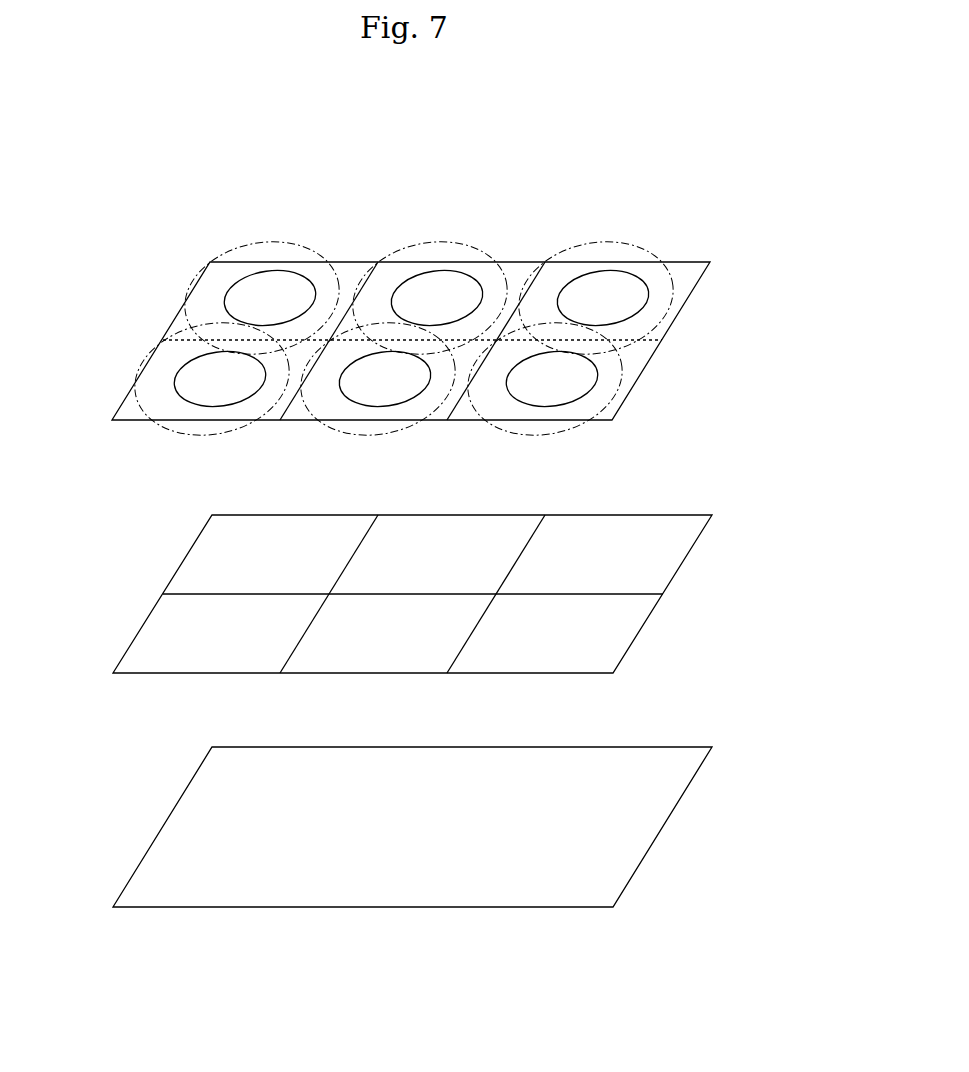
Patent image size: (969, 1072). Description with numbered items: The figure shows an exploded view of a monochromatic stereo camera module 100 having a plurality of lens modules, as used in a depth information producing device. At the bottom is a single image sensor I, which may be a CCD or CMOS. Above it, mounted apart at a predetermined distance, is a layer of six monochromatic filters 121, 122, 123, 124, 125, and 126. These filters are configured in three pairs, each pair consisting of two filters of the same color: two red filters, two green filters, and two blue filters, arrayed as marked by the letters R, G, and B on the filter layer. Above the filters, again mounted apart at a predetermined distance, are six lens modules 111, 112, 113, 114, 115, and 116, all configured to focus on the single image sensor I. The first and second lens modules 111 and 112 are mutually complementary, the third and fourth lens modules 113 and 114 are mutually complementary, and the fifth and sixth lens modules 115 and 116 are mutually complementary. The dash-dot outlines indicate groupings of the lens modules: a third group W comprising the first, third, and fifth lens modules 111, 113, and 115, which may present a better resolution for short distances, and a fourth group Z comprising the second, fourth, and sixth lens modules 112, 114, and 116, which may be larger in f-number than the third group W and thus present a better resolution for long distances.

The monochromatic stereo camera module 100 is at (667, 170).
The first lens module 111 is at (420, 280).
The second lens module 112 is at (390, 405).
The third lens module 113 is at (174, 375).
The fourth lens module 114 is at (635, 280).
The fifth lens module 115 is at (598, 373).
The sixth lens module 116 is at (242, 280).
The monochromatic filter 121 is at (472, 527).
The monochromatic filter 122 is at (383, 673).
The monochromatic filter 123 is at (157, 628).
The monochromatic filter 124 is at (645, 523).
The monochromatic filter 125 is at (608, 642).
The monochromatic filter 126 is at (200, 552).
The fourth group Z is at (278, 243).
The third group W is at (497, 280).
The single image sensor I is at (692, 777).